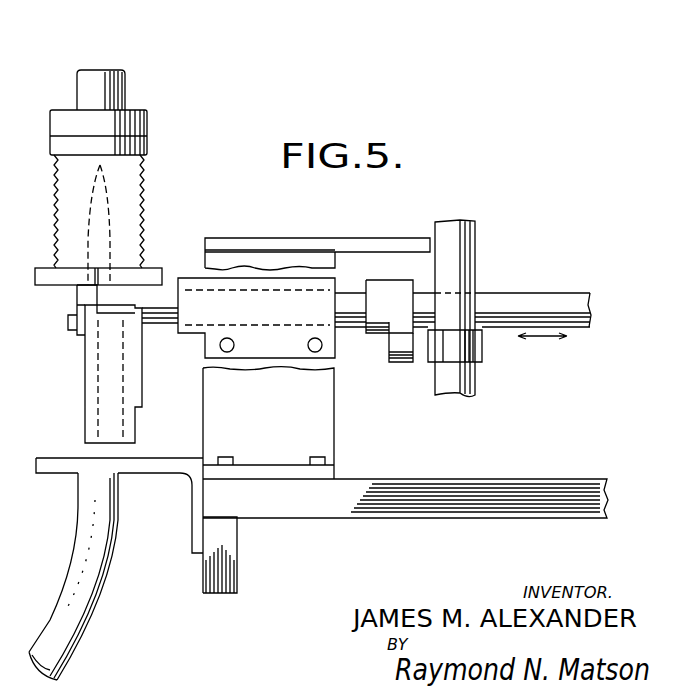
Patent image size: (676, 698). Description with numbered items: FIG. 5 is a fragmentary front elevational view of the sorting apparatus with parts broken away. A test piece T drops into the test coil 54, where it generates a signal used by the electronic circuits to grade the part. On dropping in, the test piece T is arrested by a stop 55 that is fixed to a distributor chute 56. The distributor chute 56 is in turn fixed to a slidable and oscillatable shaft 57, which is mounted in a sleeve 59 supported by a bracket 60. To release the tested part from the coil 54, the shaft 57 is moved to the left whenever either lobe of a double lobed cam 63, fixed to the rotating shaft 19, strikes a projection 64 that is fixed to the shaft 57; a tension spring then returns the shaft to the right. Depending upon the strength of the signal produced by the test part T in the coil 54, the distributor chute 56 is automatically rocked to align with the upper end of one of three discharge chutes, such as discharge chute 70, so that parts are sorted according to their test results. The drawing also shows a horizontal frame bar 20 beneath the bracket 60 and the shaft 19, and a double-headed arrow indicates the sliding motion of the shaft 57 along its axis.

The test coil 54 is at (60, 183).
The test piece T is at (106, 190).
The stop 55 is at (78, 298).
The distributor chute 56 is at (88, 380).
The sleeve 59 is at (190, 278).
The bracket 60 is at (258, 248).
The slidable and oscillatable shaft 57 is at (352, 293).
The projection 64 is at (400, 362).
The rotating shaft 19 is at (465, 263).
The double lobed cam 63 is at (460, 348).
The base bar 20 is at (528, 483).
The discharge chute 70 is at (80, 518).